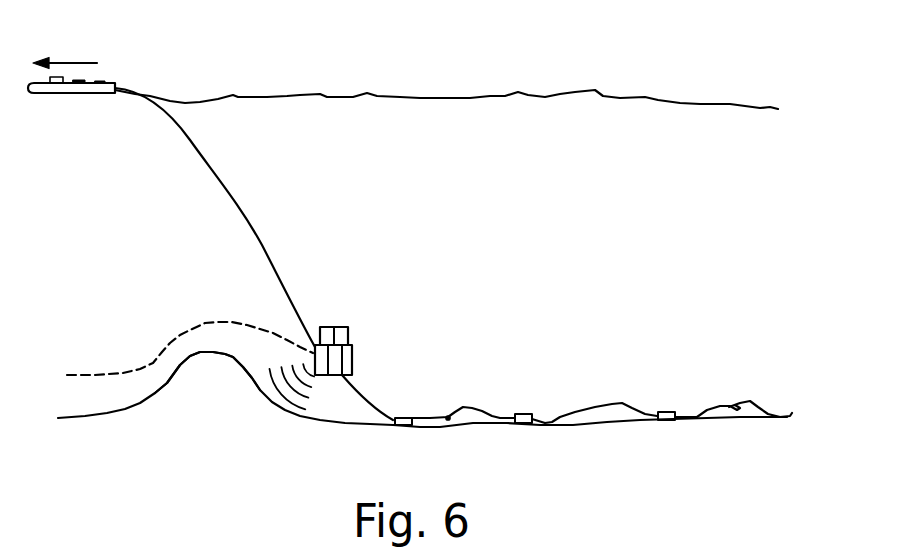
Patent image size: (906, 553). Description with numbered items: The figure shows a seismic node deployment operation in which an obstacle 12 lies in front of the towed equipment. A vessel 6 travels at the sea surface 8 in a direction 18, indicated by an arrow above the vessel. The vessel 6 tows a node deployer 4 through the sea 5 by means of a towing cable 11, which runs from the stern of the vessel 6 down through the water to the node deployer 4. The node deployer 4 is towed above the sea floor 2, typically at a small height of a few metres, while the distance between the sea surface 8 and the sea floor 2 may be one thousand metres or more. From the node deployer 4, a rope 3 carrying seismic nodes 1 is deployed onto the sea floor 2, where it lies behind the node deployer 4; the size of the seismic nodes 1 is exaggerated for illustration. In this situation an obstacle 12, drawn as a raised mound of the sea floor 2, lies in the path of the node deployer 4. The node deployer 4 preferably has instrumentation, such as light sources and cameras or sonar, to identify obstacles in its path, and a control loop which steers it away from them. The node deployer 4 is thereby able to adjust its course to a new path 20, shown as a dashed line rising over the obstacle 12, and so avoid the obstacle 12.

The seismic nodes 1 is at (404, 418).
The sea floor 2 is at (615, 425).
The rope 3 is at (607, 407).
The node deployer 4 is at (348, 352).
The sea 5 is at (534, 228).
The vessel 6 is at (75, 93).
The sea surface 8 is at (448, 98).
The towing cable 11 is at (247, 210).
The obstacle 12 is at (213, 367).
The direction 18 is at (65, 49).
The new path 20 is at (178, 335).